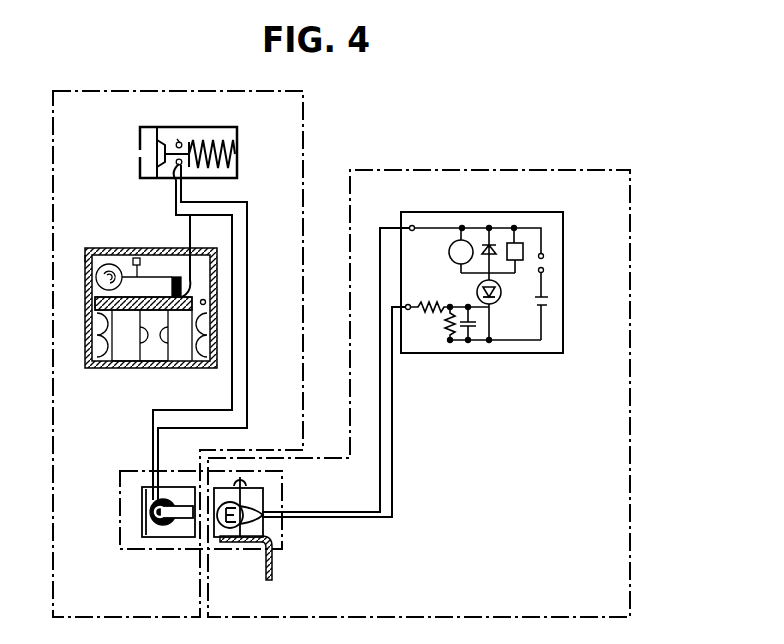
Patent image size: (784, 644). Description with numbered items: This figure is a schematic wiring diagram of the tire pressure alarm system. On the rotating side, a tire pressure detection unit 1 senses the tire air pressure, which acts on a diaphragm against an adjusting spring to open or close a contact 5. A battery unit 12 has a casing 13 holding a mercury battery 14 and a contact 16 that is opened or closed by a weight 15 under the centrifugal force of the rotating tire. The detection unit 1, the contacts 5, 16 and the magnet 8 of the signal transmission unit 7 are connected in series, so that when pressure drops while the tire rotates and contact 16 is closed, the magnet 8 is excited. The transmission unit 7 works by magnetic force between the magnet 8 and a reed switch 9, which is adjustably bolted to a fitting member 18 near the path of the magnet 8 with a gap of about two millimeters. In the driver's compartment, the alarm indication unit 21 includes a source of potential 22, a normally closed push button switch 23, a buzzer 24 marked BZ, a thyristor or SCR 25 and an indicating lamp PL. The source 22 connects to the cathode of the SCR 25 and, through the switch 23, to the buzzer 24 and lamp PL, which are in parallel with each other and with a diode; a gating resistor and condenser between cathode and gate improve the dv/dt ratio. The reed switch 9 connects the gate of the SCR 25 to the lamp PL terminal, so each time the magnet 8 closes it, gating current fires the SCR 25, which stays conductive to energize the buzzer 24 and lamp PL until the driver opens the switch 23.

The tire pressure detection unit 1 is at (157, 127).
The contact 5 is at (170, 178).
The signal transmission unit 7 is at (192, 549).
The magnet 8 is at (156, 538).
The reed switch 9 is at (255, 543).
The battery unit 12 is at (92, 249).
The casing 13 is at (88, 262).
The mercury battery 14 is at (125, 352).
The weight 15 is at (96, 290).
The contact 16 is at (137, 258).
The fitting member 18 is at (276, 568).
The alarm indication unit 21 is at (418, 192).
The source of potential 22 is at (550, 307).
The normally closed push button switch 23 is at (547, 258).
The buzzer 24 is at (507, 242).
The thyristor (SCR) 25 is at (495, 302).
The indicating lamp PL is at (458, 266).
The buzzer BZ is at (505, 306).